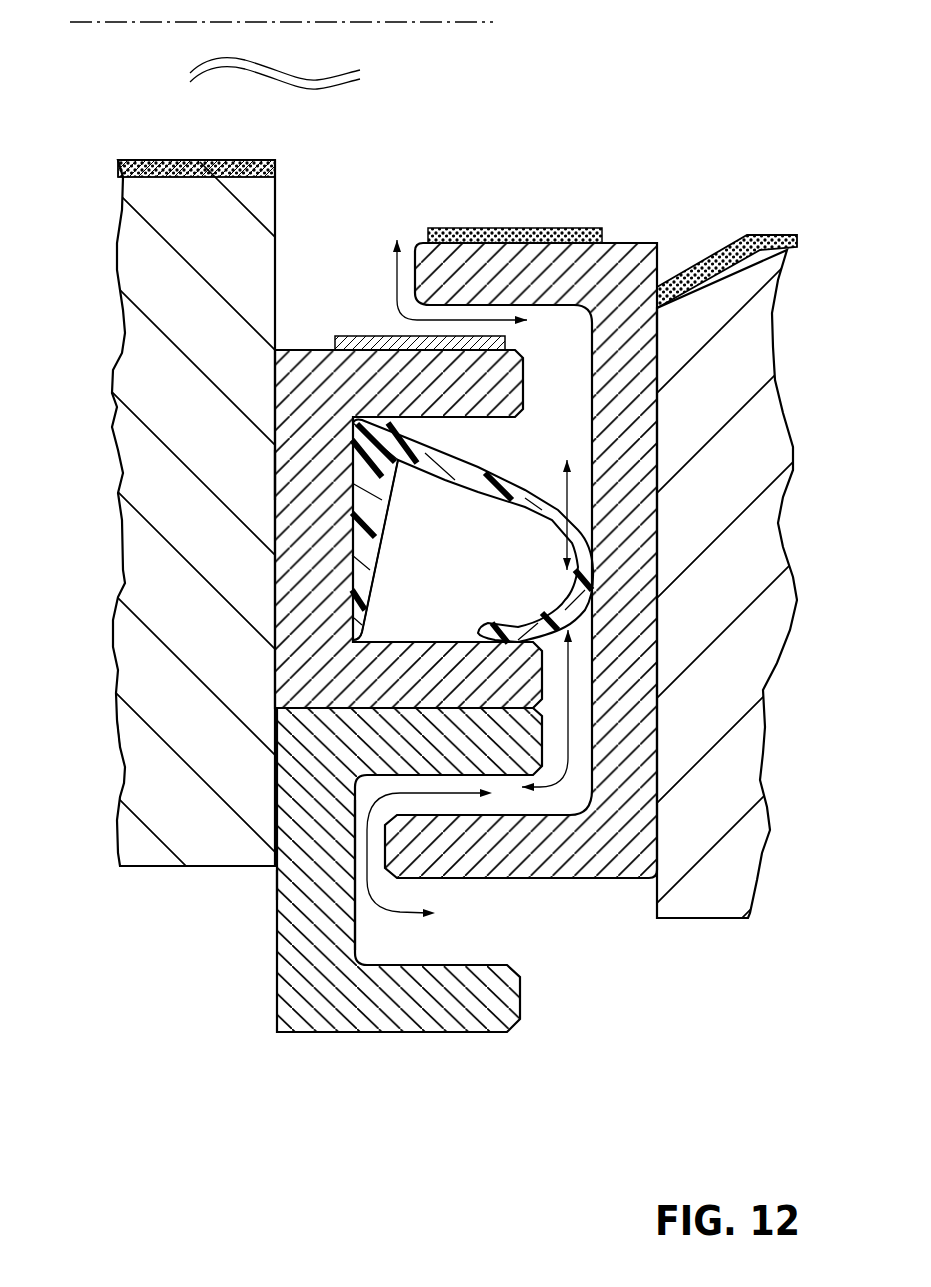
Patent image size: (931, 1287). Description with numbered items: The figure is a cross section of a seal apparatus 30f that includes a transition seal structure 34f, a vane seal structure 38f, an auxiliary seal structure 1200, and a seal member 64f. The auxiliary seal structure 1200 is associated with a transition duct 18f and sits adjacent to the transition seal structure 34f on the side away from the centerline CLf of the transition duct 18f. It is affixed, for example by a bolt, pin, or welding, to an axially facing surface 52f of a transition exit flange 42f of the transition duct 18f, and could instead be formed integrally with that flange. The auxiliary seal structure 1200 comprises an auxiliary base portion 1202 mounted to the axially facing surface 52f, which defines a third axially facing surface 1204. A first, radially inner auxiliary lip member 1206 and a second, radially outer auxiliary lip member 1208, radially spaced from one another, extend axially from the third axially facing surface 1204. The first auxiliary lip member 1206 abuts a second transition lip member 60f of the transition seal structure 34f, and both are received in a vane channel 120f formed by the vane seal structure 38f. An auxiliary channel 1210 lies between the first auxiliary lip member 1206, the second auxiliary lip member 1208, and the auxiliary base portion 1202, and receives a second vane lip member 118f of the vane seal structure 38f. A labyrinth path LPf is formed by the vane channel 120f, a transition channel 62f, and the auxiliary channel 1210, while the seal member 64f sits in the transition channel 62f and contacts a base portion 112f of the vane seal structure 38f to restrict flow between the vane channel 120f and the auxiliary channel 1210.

The transition duct 18f is at (114, 697).
The transition exit flange 42f is at (123, 780).
The axially facing surface 52f is at (280, 488).
The transition seal structure 34f is at (292, 340).
The second transition lip member 60f is at (463, 652).
The transition channel 62f is at (468, 552).
The seal member 64f is at (430, 483).
The vane channel 120f is at (545, 480).
The seal apparatus 30f is at (575, 200).
The vane seal structure 38f is at (645, 226).
The base portion 112f is at (650, 410).
The second vane lip member 118f is at (520, 832).
The auxiliary seal structure 1200 is at (262, 1043).
The auxiliary base portion 1202 is at (293, 883).
The third axially facing surface 1204 is at (362, 905).
The first auxiliary lip member 1206 is at (433, 722).
The second auxiliary lip member 1208 is at (380, 1015).
The auxiliary channel 1210 is at (433, 783).
The centerline CLf is at (448, 22).
The labyrinth path LPf is at (472, 915).